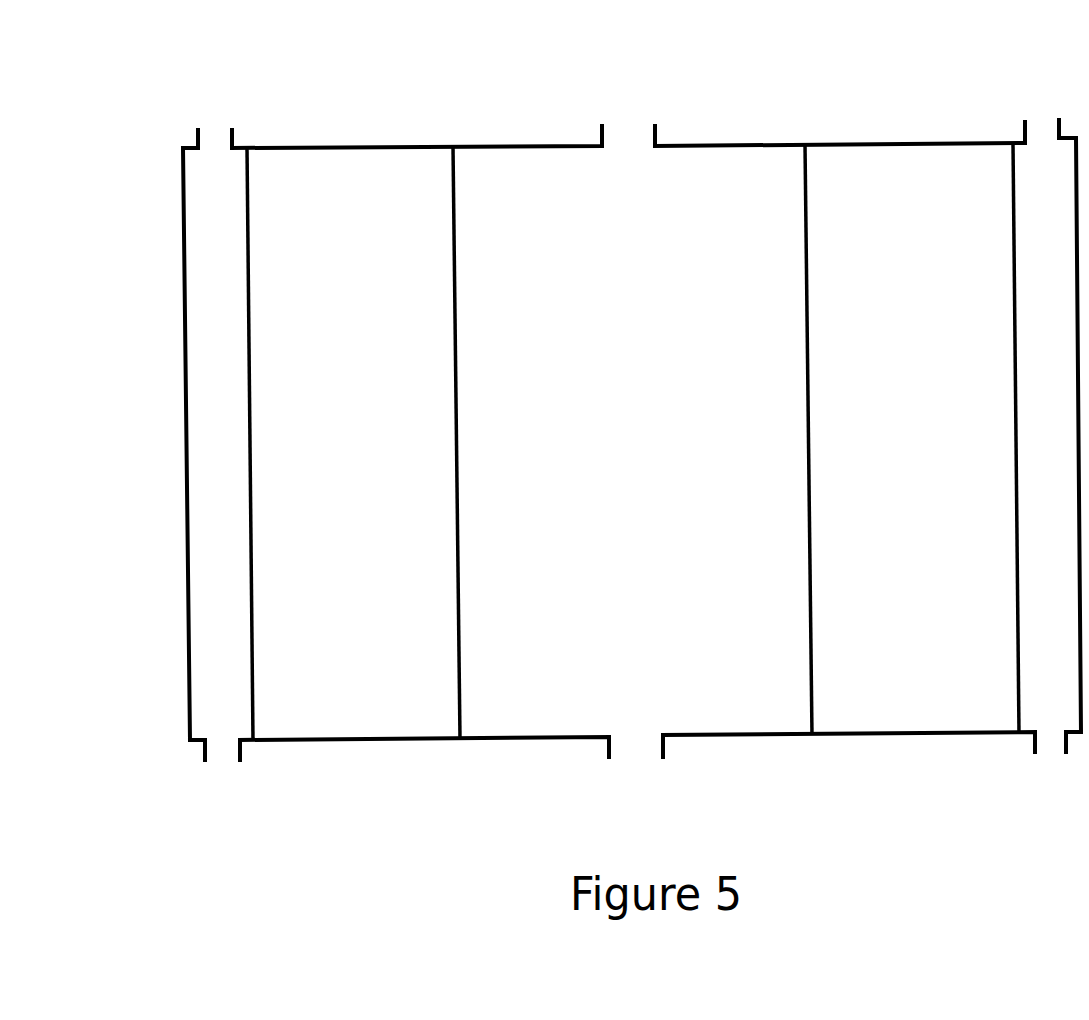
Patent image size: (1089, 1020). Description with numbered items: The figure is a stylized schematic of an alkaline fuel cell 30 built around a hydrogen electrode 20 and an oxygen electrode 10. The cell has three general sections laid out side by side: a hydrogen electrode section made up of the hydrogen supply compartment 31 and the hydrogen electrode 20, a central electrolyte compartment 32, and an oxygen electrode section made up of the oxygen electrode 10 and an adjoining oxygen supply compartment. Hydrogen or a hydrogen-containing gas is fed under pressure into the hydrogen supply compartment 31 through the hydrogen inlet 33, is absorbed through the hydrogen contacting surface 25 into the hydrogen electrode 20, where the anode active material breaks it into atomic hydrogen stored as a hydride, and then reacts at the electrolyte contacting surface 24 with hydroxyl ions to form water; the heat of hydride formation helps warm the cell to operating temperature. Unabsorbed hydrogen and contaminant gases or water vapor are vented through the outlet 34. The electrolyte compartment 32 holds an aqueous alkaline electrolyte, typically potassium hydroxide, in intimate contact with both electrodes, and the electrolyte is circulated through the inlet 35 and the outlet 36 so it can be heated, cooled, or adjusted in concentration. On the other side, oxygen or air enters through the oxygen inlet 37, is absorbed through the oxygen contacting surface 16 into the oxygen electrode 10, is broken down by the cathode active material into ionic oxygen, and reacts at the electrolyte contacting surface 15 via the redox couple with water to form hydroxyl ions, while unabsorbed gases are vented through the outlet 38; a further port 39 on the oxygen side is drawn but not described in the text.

The oxygen electrode 10 is at (912, 440).
The electrolyte contacting surface 15 is at (796, 161).
The oxygen contacting surface 16 is at (1001, 158).
The hydrogen electrode 20 is at (353, 444).
The electrolyte contacting surface 24 is at (464, 166).
The hydrogen contacting surface 25 is at (258, 168).
The alkaline fuel cell 30 is at (163, 291).
The hydrogen supply compartment 31 is at (218, 444).
The electrolyte compartment 32 is at (633, 442).
The hydrogen inlet 33 is at (1047, 437).
The outlet 34 is at (213, 129).
The inlet 35 is at (222, 763).
The outlet 36 is at (627, 127).
The oxygen inlet 37 is at (637, 756).
The outlet 38 is at (1044, 124).
The outlet 39 is at (1051, 749).